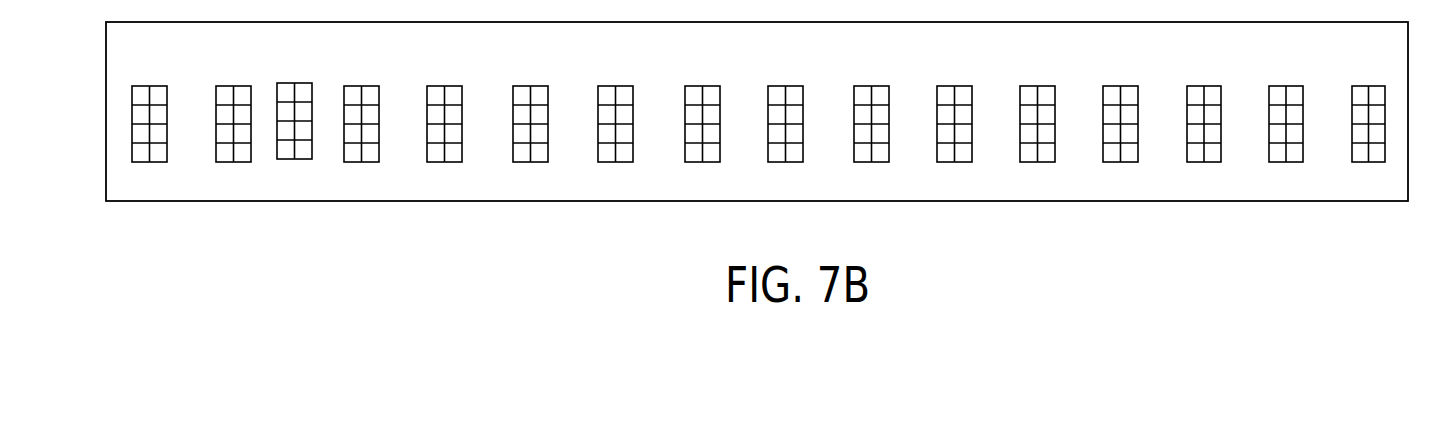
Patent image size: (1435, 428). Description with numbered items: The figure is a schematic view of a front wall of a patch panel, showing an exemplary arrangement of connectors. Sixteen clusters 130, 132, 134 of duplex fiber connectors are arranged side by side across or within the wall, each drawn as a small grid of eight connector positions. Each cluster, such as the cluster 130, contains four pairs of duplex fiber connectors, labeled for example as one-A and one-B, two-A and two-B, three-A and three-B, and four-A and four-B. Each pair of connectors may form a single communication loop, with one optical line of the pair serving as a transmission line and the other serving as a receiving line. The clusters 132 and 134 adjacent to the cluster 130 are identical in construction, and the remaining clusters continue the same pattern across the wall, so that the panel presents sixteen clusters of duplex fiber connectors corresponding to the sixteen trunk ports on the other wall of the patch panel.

The cluster of duplex fiber connectors 130 is at (1368, 166).
The cluster of duplex fiber connectors 132 is at (1286, 166).
The cluster of duplex fiber connectors 134 is at (1207, 166).